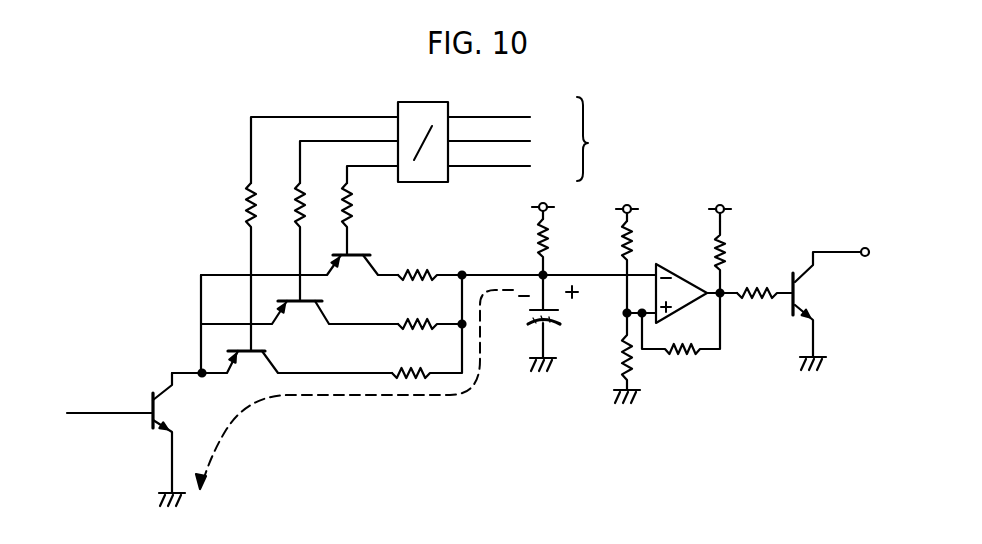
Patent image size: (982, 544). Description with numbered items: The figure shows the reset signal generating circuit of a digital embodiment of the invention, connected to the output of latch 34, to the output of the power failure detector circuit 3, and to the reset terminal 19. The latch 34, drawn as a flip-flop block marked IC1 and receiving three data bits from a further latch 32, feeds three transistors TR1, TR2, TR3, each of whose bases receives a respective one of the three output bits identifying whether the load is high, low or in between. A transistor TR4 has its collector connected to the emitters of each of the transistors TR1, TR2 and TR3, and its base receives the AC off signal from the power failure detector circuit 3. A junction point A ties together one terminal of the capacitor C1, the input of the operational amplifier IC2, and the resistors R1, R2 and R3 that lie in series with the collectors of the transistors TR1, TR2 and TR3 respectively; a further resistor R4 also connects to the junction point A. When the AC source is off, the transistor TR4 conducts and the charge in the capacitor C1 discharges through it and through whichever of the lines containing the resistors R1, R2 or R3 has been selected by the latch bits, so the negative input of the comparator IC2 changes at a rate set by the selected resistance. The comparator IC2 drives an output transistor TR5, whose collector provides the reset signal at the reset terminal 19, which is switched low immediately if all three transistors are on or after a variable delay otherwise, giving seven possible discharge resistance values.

The flip-flop IC1 is at (432, 183).
The latch 34 is at (449, 108).
The latch 32 is at (588, 139).
The transistor TR1 is at (365, 253).
The transistor TR2 is at (325, 299).
The transistor TR3 is at (270, 358).
The transistor TR4 is at (168, 416).
The transistor TR5 is at (815, 296).
The resistor R1 is at (430, 262).
The resistor R2 is at (430, 311).
The resistor R3 is at (427, 326).
The resistor R4 is at (540, 242).
The capacitor C1 is at (537, 323).
The junction point A is at (547, 272).
The operational amplifier IC2 is at (690, 256).
The reset terminal 19 is at (862, 248).
The power failure detector circuit 3 is at (81, 438).